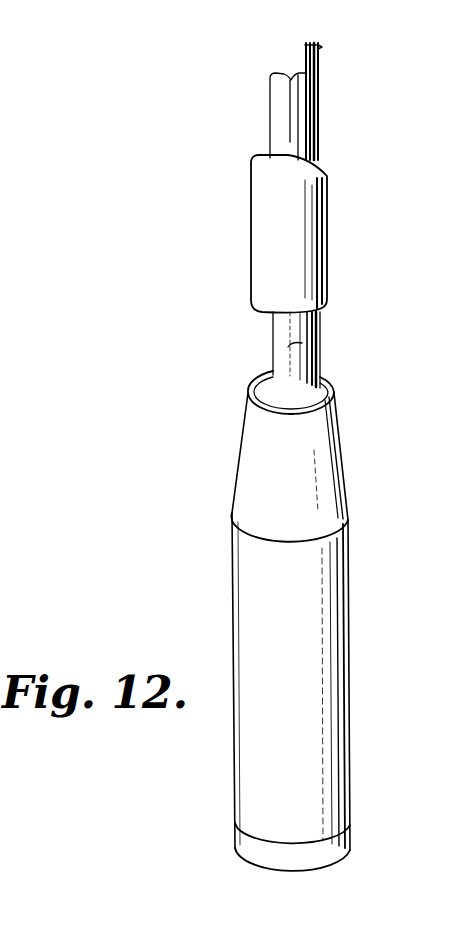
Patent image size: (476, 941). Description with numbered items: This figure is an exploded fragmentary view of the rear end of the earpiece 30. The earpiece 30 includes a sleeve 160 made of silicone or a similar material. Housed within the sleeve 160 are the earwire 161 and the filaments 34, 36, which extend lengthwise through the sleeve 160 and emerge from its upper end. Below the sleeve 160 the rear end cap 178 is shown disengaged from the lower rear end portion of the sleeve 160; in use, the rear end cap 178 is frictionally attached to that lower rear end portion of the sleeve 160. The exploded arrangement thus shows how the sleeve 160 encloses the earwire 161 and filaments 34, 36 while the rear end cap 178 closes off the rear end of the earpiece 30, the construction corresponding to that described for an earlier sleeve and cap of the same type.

The earpiece 30 is at (247, 183).
The filament 34 is at (317, 59).
The filament 36 is at (305, 67).
The sleeve 160 is at (285, 260).
The earwire 161 is at (320, 363).
The rear end cap 178 is at (217, 618).